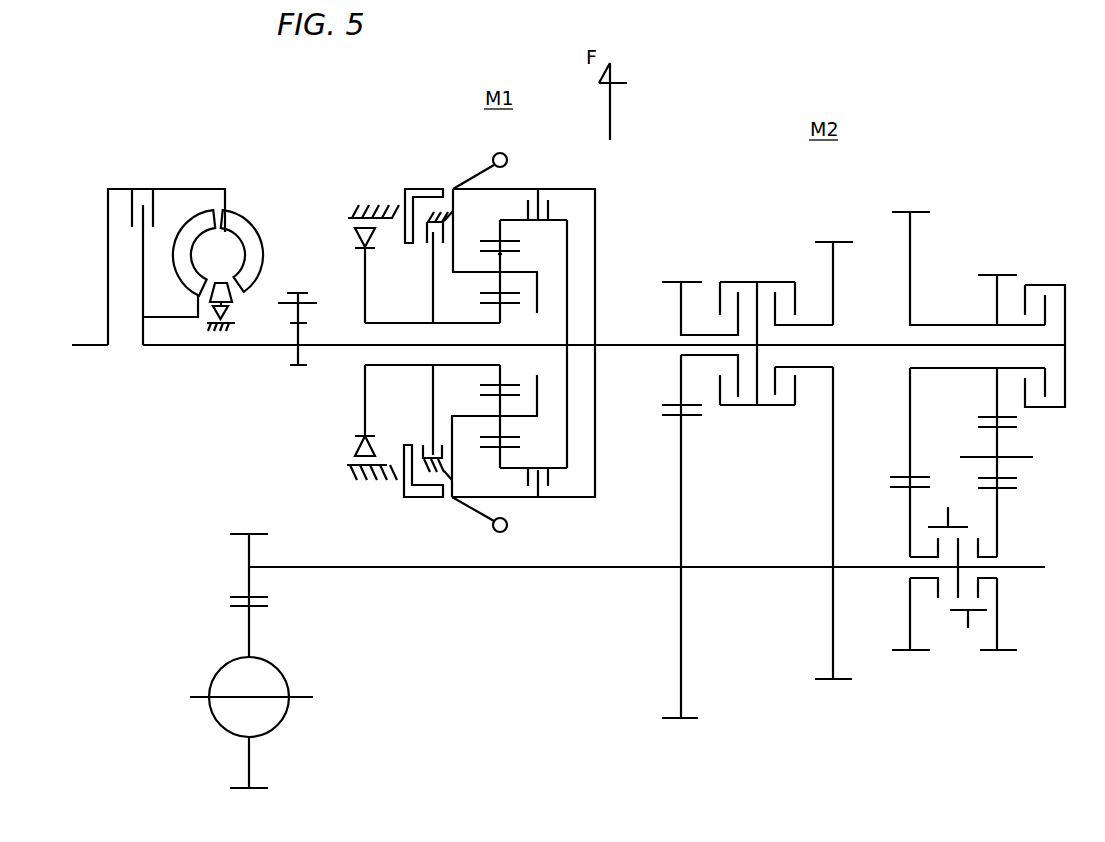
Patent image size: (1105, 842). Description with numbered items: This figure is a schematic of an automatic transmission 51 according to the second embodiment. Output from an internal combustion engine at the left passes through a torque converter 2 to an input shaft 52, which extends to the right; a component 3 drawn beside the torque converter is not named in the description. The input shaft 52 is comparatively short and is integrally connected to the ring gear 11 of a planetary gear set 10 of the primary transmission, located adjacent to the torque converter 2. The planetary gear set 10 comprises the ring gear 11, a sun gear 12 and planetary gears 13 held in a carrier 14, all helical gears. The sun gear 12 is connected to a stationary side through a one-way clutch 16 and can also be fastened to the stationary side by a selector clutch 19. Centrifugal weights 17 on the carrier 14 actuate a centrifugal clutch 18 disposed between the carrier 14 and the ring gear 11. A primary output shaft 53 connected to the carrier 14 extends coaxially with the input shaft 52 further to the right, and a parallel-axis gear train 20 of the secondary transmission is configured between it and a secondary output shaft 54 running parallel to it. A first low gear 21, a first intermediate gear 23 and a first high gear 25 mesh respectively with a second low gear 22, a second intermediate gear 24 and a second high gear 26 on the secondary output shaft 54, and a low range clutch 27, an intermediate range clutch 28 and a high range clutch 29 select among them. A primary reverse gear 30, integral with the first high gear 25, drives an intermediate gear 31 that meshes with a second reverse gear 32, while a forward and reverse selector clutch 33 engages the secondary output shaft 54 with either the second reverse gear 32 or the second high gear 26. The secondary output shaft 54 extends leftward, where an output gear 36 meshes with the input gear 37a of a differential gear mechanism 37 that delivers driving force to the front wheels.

The torque converter 2 is at (258, 226).
The damper 3 is at (155, 206).
The planetary gear set 10 is at (607, 237).
The ring gear 11 is at (505, 231).
The sun gear 12 is at (497, 319).
The planetary gears 13 is at (504, 259).
The carrier 14 is at (473, 192).
The one-way clutch 16 is at (350, 245).
The centrifugal weights 17 is at (508, 160).
The centrifugal clutch 18 is at (553, 205).
The selector clutch 19 is at (432, 241).
The gear train 20 is at (843, 216).
The first low gear 21 is at (680, 302).
The second low gear 22 is at (680, 697).
The first intermediate gear 23 is at (833, 263).
The second intermediate gear 24 is at (833, 650).
The first high gear 25 is at (910, 238).
The second high gear 26 is at (910, 628).
The low range clutch 27 is at (733, 280).
The intermediate range clutch 28 is at (772, 280).
The high range clutch 29 is at (1054, 283).
The primary reverse gear 30 is at (997, 296).
The intermediate gear 31 is at (995, 448).
The second reverse gear 32 is at (1000, 628).
The forward and reverse selector clutch 33 is at (967, 641).
The output gear 36 is at (249, 551).
The differential gear mechanism 37 is at (210, 682).
The input gear 37a is at (249, 760).
The automatic transmission 51 is at (696, 165).
The input shaft 52 is at (331, 350).
The primary output shaft 53 is at (878, 342).
The secondary output shaft 54 is at (585, 569).